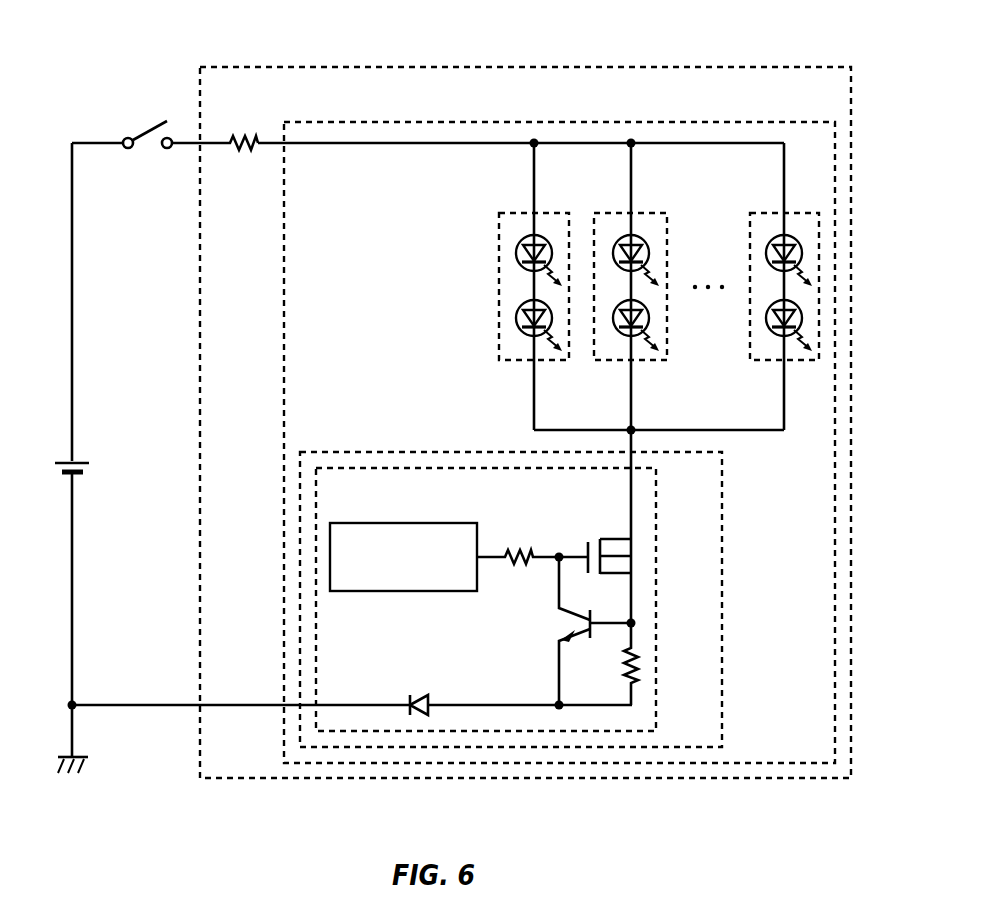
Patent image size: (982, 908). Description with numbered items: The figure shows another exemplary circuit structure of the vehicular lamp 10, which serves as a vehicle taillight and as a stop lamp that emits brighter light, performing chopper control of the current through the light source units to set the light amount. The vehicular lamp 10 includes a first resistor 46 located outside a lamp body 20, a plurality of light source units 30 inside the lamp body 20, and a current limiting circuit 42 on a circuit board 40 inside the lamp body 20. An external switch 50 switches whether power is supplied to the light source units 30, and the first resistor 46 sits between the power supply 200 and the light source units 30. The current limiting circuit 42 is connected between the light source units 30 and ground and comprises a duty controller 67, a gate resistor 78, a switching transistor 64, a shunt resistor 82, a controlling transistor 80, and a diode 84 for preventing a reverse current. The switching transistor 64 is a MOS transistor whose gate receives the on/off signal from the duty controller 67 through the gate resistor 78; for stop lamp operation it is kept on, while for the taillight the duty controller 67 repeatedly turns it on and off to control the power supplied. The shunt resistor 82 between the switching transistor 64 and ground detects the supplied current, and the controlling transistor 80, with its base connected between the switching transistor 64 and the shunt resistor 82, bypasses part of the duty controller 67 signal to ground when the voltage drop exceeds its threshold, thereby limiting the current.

The vehicular lamp 10 is at (498, 67).
The lamp body 20 is at (559, 122).
The light source unit 30 is at (556, 361).
The circuit board 40 is at (723, 642).
The current limiting circuit 42 is at (657, 700).
The first resistor 46 is at (239, 140).
The external switch 50 is at (147, 156).
The switching transistor 64 is at (593, 524).
The duty controller 67 is at (398, 522).
The gate resistor 78 is at (517, 550).
The controlling transistor 80 is at (538, 634).
The shunt resistor 82 is at (628, 667).
The diode 84 is at (419, 695).
The power supply 200 is at (62, 462).